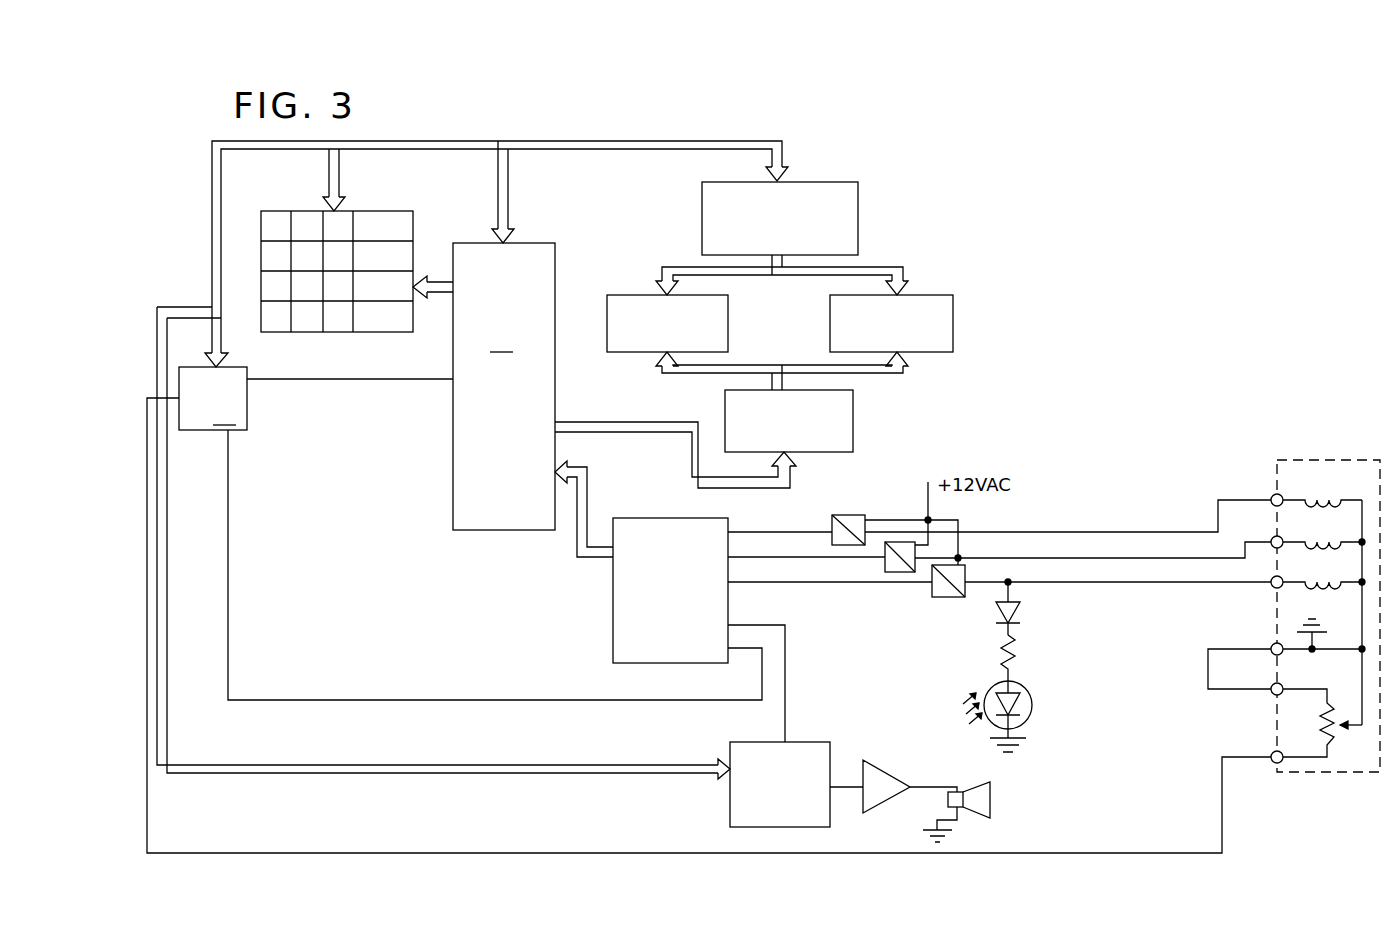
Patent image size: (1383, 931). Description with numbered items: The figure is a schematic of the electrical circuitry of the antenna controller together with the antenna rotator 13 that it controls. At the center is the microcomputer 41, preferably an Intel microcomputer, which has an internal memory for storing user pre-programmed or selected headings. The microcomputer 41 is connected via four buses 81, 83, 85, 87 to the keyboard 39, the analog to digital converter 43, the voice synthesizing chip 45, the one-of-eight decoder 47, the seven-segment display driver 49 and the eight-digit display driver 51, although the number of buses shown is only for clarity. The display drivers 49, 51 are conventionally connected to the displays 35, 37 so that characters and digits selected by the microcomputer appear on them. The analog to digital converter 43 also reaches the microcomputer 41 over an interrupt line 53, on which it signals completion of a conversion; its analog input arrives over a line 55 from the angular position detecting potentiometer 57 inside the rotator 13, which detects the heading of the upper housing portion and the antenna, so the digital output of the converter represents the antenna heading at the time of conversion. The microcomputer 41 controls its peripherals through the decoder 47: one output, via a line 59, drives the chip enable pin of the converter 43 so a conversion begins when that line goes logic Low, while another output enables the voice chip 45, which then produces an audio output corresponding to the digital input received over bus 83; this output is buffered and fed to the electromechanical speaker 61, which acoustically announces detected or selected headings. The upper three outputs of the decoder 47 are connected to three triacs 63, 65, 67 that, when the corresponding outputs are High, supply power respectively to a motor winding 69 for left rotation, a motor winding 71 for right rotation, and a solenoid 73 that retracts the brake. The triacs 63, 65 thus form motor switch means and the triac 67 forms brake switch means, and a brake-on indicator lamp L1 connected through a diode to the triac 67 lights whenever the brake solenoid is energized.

The antenna rotator 13 is at (1330, 425).
The display 35 is at (625, 275).
The display 37 is at (830, 320).
The keyboard 39 is at (305, 210).
The microcomputer 41 is at (504, 386).
The analog to digital converter 43 is at (247, 397).
The voice synthesizing integrated circuit chip 45 is at (775, 828).
The one-of-eight decoder 47 is at (613, 605).
The seven-segment display driver 49 is at (725, 407).
The eight-digit display driver 51 is at (702, 217).
The interrupt line 53 is at (325, 380).
The line 55 is at (450, 822).
The angular position detecting potentiometer 57 is at (1322, 748).
The line 59 is at (570, 676).
The electromechanical speaker 61 is at (992, 804).
The triac 63 is at (843, 515).
The triac 65 is at (885, 560).
The triac 67 is at (935, 597).
The motor winding 69 is at (1330, 495).
The motor winding 71 is at (1325, 538).
The solenoid 73 is at (1328, 580).
The bus 81 is at (656, 402).
The bus 83 is at (498, 222).
The bus 85 is at (441, 294).
The bus 87 is at (590, 510).
The brake-on indicator lamp L1 is at (1030, 690).